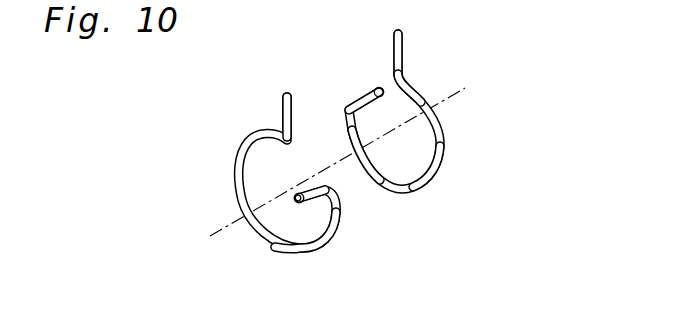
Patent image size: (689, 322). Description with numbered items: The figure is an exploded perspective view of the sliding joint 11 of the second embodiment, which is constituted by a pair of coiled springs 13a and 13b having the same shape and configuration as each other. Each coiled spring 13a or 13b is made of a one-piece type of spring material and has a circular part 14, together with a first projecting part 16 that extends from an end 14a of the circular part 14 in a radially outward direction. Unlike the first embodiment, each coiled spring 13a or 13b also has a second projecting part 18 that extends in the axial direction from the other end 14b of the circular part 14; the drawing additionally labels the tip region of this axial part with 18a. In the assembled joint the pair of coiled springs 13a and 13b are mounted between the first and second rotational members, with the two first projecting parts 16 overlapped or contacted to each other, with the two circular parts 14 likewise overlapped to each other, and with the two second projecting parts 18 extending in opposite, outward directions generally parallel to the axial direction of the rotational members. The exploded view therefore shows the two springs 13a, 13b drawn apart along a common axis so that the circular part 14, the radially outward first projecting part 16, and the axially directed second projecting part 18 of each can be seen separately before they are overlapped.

The sliding joint 11 is at (521, 214).
The coiled spring 13a is at (324, 259).
The coiled spring 13b is at (441, 191).
The circular part 14 is at (445, 143).
The end of circular part 14a is at (408, 72).
The other end of circular part 14b is at (344, 110).
The first projecting part 16 is at (404, 43).
The second projecting part 18 is at (355, 103).
The arm tip 18a is at (382, 88).